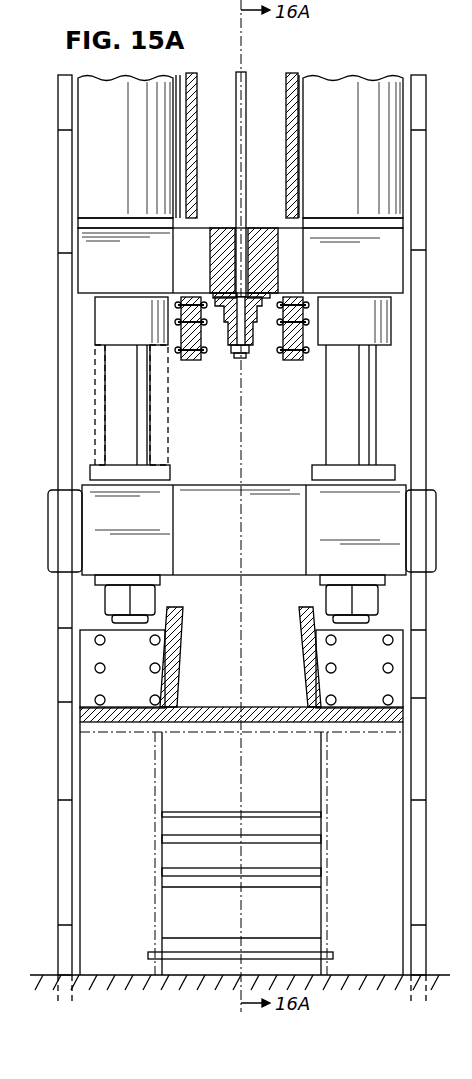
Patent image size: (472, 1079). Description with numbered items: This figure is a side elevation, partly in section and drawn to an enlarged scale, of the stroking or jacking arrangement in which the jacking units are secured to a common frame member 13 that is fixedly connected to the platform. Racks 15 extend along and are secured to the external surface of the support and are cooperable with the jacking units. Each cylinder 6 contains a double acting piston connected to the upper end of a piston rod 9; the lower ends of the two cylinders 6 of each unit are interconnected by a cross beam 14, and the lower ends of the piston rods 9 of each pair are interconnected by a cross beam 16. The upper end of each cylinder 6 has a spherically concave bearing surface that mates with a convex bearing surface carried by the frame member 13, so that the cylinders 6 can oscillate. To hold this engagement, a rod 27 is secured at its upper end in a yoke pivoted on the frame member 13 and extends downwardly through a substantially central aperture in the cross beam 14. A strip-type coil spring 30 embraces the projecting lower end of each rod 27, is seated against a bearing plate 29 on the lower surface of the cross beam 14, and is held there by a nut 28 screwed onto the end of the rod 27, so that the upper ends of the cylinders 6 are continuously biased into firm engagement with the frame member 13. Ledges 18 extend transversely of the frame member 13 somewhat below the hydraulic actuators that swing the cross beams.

The cylinder 6 is at (95, 134).
The piston rod 9 is at (360, 408).
The frame member 13 is at (191, 360).
The cross beam 14 is at (386, 242).
The rack 15 is at (60, 266).
The cross beam 16 is at (390, 530).
The ledge 18 is at (291, 360).
The rod 27 is at (247, 76).
The nut 28 is at (236, 358).
The bearing plate 29 is at (252, 263).
The strip-type coil spring 30 is at (258, 338).